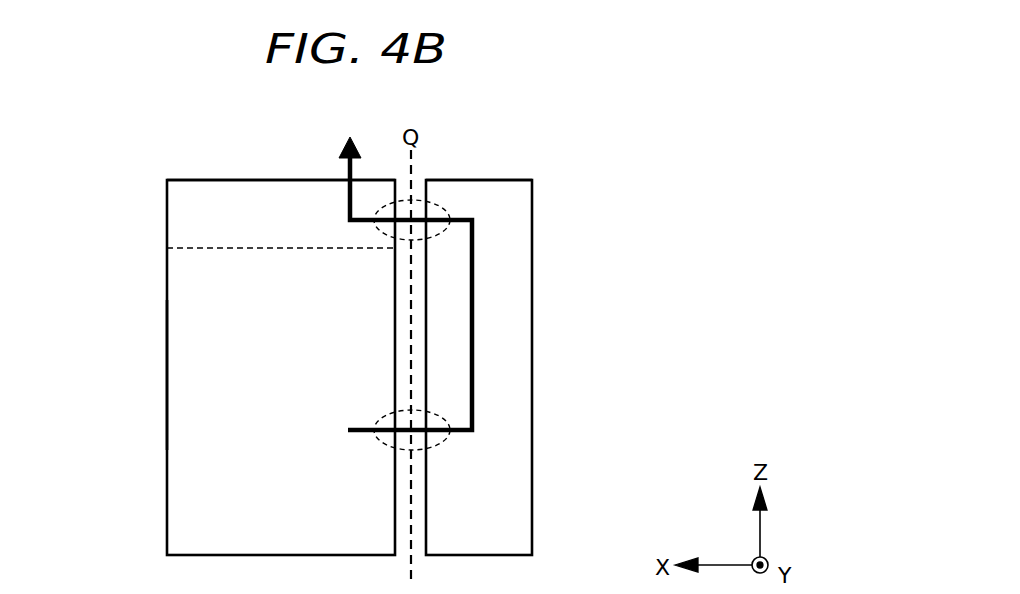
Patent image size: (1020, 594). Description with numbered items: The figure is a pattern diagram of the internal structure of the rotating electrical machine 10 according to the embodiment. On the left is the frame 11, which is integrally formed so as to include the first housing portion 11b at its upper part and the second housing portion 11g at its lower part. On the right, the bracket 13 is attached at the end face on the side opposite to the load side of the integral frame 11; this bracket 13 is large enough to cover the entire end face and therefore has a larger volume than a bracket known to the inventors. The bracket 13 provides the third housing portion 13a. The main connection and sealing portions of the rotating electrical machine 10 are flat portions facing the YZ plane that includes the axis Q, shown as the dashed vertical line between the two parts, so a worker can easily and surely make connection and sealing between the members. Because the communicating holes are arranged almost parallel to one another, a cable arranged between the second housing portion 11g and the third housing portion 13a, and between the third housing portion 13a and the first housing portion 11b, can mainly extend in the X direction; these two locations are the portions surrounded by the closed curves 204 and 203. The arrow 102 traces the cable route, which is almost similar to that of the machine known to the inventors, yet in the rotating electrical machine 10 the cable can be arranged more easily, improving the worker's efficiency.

The rotating electrical machine 10 is at (556, 128).
The frame 11 is at (166, 224).
The first housing portion 11b is at (232, 195).
The second housing portion 11g is at (190, 375).
The bracket 13 is at (533, 274).
The third housing portion 13a is at (515, 200).
The arrow 102 is at (476, 343).
The closed curve 203 is at (440, 213).
The closed curve 204 is at (447, 418).